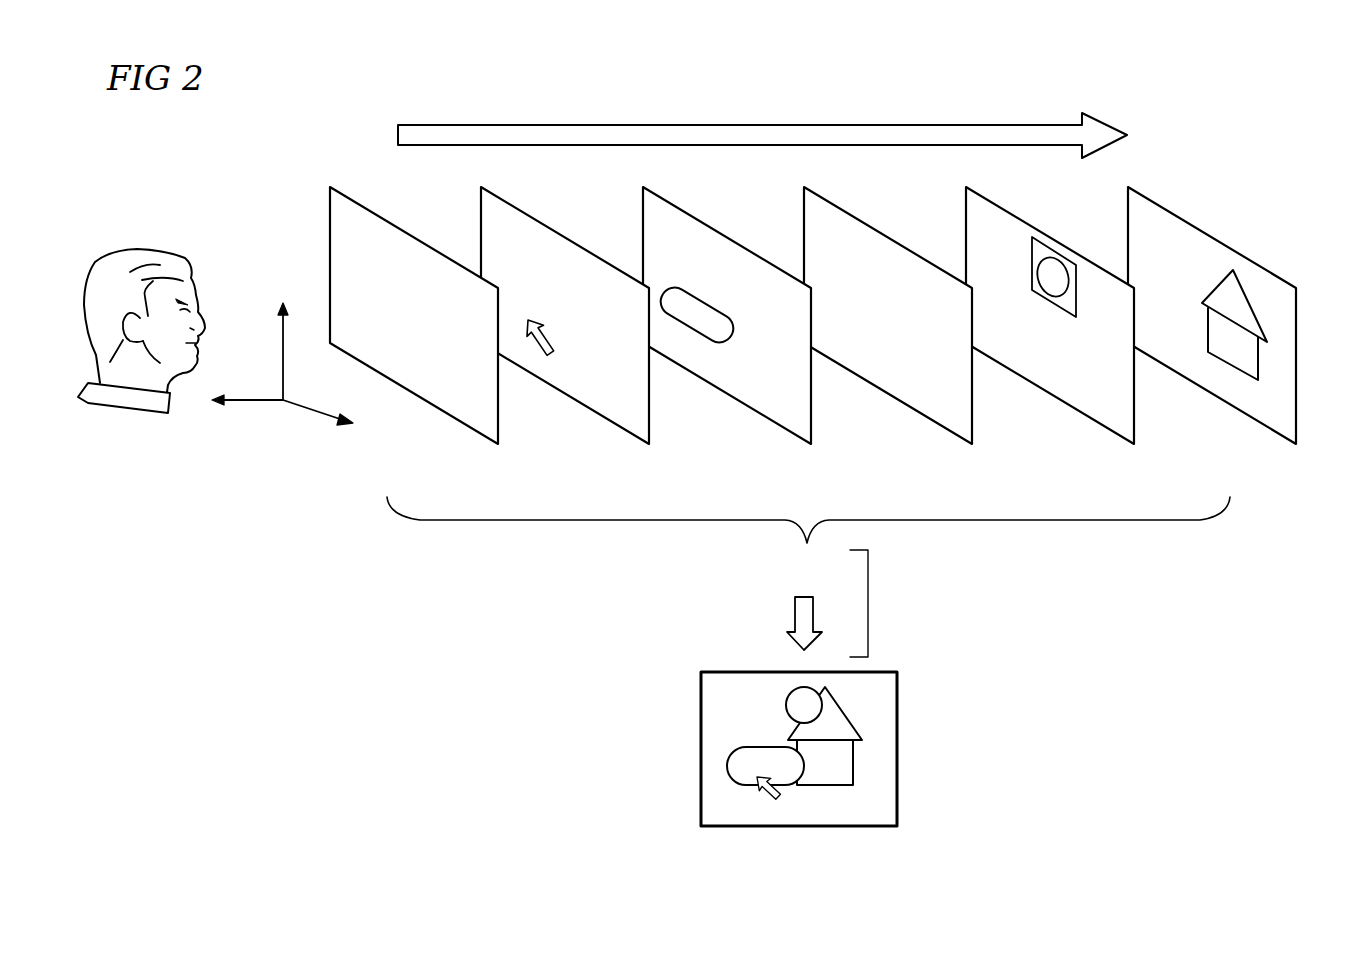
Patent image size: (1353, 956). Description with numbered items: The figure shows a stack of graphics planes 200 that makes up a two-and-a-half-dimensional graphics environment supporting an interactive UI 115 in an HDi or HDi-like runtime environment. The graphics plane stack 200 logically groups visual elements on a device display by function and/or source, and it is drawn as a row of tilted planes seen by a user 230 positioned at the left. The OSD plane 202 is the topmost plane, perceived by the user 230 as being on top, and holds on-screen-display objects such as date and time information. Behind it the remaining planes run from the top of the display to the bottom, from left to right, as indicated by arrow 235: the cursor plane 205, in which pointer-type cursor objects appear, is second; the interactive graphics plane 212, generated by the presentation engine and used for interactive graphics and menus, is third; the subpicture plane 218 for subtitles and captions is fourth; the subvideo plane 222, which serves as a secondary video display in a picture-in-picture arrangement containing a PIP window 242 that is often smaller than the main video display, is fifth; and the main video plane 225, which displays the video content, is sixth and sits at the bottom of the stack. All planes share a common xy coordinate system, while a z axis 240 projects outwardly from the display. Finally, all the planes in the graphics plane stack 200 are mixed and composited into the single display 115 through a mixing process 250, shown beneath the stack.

The interactive UI 115 is at (701, 712).
The graphics plane stack 200 is at (813, 365).
The OSD plane 202 is at (478, 433).
The cursor plane 205 is at (628, 432).
The interactive graphics plane 212 is at (797, 434).
The subpicture plane 218 is at (955, 436).
The subvideo plane 222 is at (1050, 331).
The main video plane 225 is at (1285, 437).
The user 230 is at (135, 413).
The arrow 235 is at (586, 125).
The z axis 240 is at (258, 402).
The PIP window 242 is at (1050, 302).
The mixing process 250 is at (868, 604).